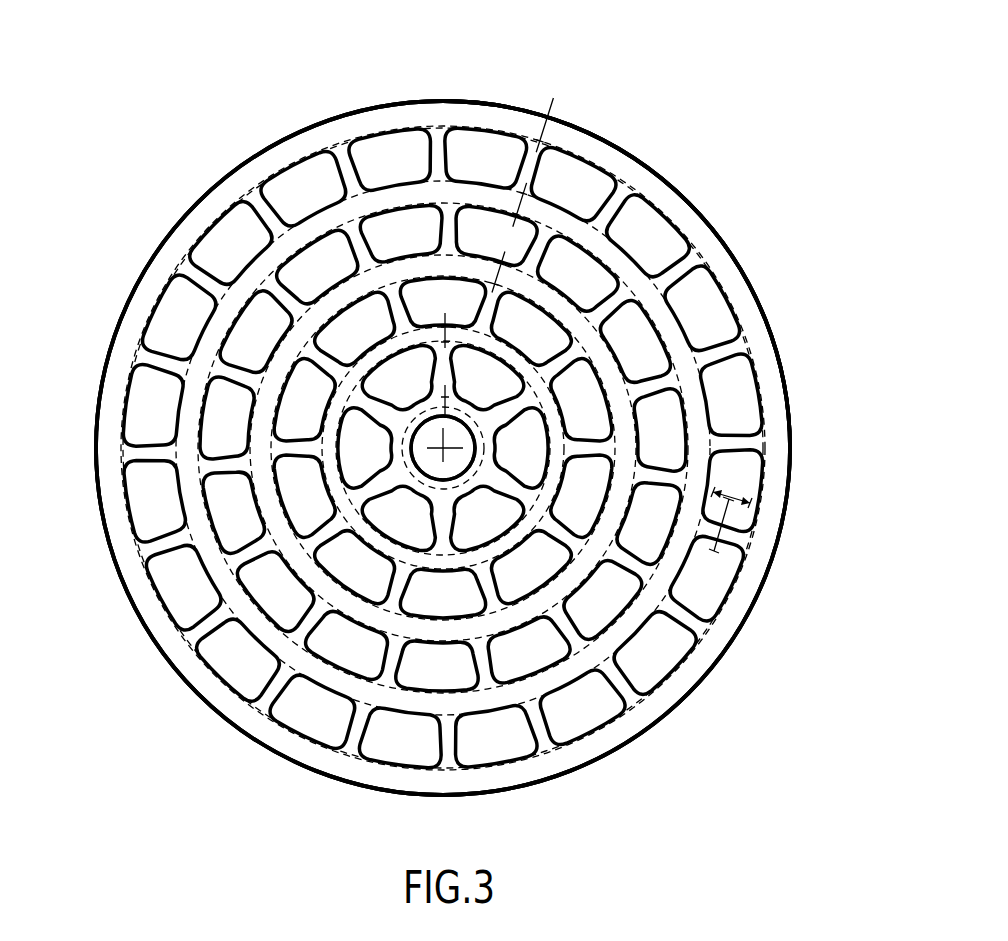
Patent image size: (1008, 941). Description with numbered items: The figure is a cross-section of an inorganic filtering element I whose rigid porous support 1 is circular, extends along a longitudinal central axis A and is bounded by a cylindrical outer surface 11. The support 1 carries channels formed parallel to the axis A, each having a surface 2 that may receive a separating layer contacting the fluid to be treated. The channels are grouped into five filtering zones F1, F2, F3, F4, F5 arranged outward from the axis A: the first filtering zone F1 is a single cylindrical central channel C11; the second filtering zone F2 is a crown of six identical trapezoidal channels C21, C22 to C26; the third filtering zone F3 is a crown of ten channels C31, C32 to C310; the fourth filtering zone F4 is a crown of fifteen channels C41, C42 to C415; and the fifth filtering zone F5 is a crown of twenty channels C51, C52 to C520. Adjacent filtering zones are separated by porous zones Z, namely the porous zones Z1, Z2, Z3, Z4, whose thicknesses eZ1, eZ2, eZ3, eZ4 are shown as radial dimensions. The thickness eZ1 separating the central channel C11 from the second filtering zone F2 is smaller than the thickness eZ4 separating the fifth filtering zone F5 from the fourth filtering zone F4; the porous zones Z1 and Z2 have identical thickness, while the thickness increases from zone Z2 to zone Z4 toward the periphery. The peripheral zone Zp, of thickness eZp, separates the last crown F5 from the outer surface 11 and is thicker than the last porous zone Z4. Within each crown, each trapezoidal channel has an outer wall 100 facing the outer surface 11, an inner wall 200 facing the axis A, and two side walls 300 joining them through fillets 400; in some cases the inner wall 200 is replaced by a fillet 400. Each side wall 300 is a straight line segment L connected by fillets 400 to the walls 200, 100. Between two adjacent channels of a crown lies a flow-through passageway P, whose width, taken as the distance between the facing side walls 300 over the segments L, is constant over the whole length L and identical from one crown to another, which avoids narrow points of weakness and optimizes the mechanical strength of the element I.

The filtering element I is at (644, 46).
The porous support 1 is at (465, 106).
The outer surface 11 is at (420, 101).
The channel surface 2 is at (403, 713).
The outer wall 100 is at (745, 618).
The inner wall 200 is at (687, 565).
The side wall 300 is at (655, 560).
The fillet 400 is at (744, 547).
The longitudinal central axis A is at (444, 449).
The straight line segment L is at (736, 490).
The flow-through passageway P is at (627, 690).
The porous zone Z is at (248, 178).
The peripheral zone Zp is at (307, 142).
The first porous zone Z1 is at (398, 427).
The second porous zone Z2 is at (330, 423).
The third porous zone Z3 is at (260, 420).
The fourth porous zone Z4 is at (190, 415).
The peripheral zone thickness eZp is at (551, 117).
The first porous zone thickness eZ1 is at (445, 405).
The second porous zone thickness eZ2 is at (445, 325).
The third porous zone thickness eZ3 is at (497, 270).
The fourth porous zone thickness eZ4 is at (520, 205).
The central channel C11 is at (423, 453).
The channel of second filtering zone C21 is at (521, 448).
The channel of second filtering zone C22 is at (482, 515).
The channel of second filtering zone C26 is at (482, 380).
The channel of third filtering zone C31 is at (581, 403).
The channel of third filtering zone C32 is at (581, 493).
The channel of third filtering zone C310 is at (529, 330).
The channel of fourth filtering zone C41 is at (635, 344).
The channel of fourth filtering zone C42 is at (661, 431).
The channel of fourth filtering zone C415 is at (575, 274).
The channel of fifth filtering zone C51 is at (702, 310).
The channel of fifth filtering zone C52 is at (731, 397).
The channel of fifth filtering zone C520 is at (646, 237).
The first filtering zone F1 is at (286, 560).
The second filtering zone F2 is at (393, 517).
The third filtering zone F3 is at (363, 586).
The fourth filtering zone F4 is at (446, 673).
The fifth filtering zone F5 is at (570, 711).